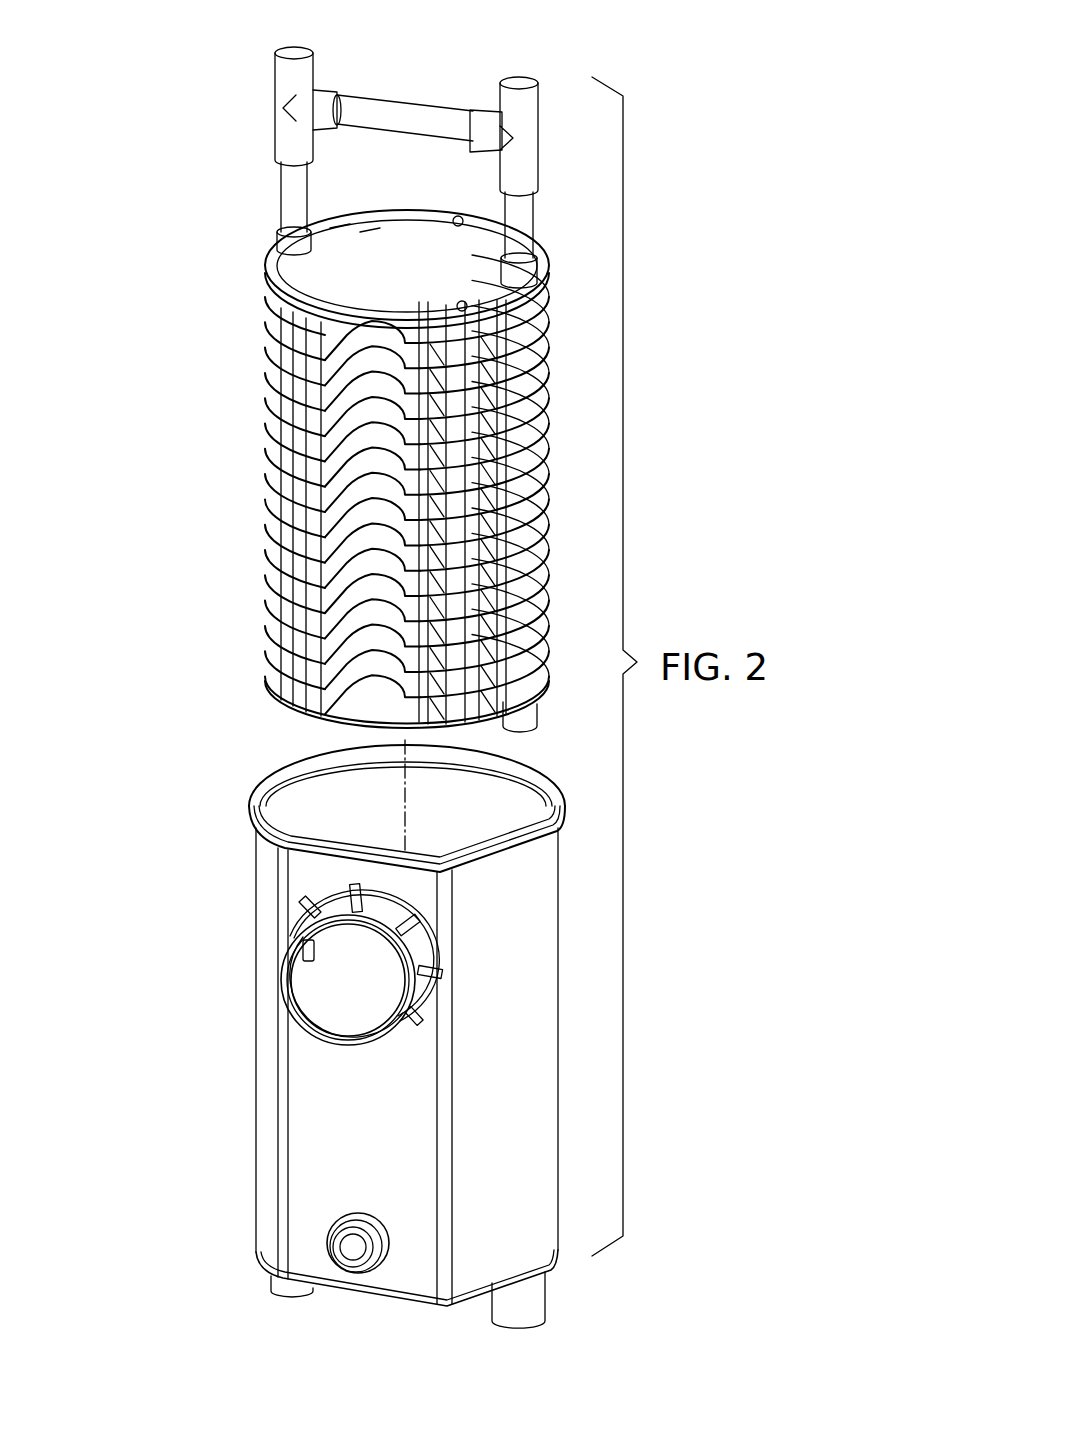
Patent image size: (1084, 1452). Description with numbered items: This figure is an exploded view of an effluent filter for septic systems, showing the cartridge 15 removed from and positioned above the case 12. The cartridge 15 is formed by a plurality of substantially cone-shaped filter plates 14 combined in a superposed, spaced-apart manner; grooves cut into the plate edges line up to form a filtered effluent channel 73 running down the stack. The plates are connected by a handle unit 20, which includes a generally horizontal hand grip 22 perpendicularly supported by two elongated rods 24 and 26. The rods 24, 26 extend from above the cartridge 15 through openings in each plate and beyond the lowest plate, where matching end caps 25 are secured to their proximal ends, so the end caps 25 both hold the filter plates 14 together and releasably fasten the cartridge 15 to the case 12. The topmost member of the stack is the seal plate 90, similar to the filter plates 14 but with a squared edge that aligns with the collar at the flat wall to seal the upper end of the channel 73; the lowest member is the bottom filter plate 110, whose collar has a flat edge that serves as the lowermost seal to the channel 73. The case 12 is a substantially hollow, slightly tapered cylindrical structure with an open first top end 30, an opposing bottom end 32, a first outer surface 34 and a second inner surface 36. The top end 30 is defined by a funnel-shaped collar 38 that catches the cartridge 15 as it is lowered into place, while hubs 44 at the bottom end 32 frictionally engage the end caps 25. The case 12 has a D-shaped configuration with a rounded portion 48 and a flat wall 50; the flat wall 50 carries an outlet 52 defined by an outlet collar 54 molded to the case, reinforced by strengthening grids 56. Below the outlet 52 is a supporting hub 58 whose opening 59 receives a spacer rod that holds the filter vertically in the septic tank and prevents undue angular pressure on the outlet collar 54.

The case 12 is at (253, 1100).
The filter plates 14 is at (270, 653).
The cartridge 15 is at (213, 385).
The handle unit 20 is at (238, 80).
The hand grip 22 is at (402, 105).
The elongated rod 24 is at (286, 192).
The end caps 25 is at (536, 712).
The elongated rod 26 is at (525, 214).
The first top end 30 is at (294, 808).
The second bottom end 32 is at (320, 1296).
The first outer surface 34 is at (268, 1188).
The second inner surface 36 is at (510, 814).
The funnel-shaped collar 38 is at (257, 808).
The hubs 44 is at (270, 1282).
The rounded portion 48 is at (534, 1068).
The flat wall 50 is at (340, 1128).
The outlet 52 is at (343, 973).
The outlet collar 54 is at (413, 950).
The strengthening grids 56 is at (434, 980).
The supporting hub 58 is at (367, 1227).
The opening 59 is at (350, 1254).
The filtered effluent channel 73 is at (370, 551).
The seal plate 90 is at (428, 250).
The bottom filter plate 110 is at (357, 703).